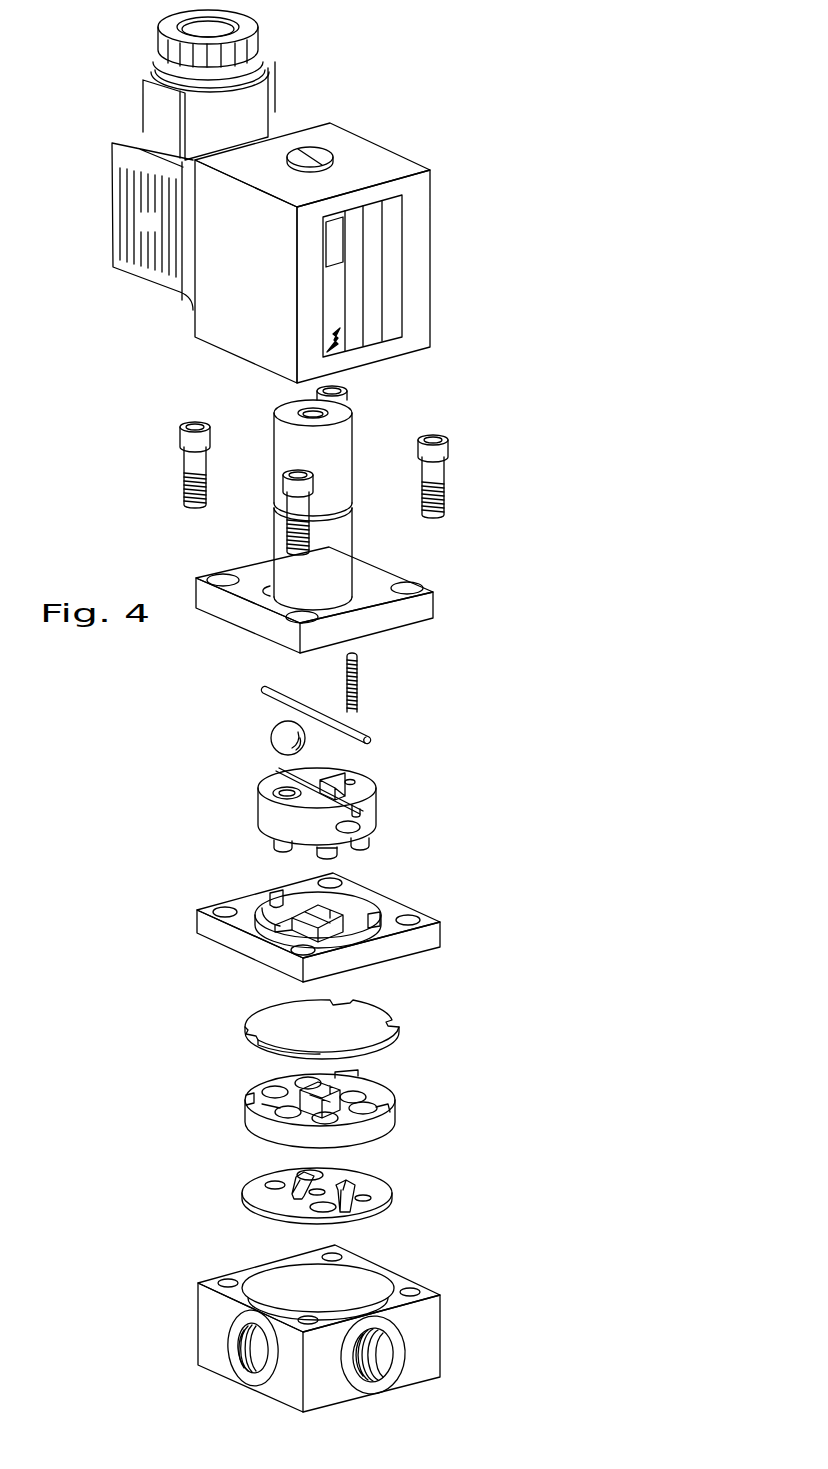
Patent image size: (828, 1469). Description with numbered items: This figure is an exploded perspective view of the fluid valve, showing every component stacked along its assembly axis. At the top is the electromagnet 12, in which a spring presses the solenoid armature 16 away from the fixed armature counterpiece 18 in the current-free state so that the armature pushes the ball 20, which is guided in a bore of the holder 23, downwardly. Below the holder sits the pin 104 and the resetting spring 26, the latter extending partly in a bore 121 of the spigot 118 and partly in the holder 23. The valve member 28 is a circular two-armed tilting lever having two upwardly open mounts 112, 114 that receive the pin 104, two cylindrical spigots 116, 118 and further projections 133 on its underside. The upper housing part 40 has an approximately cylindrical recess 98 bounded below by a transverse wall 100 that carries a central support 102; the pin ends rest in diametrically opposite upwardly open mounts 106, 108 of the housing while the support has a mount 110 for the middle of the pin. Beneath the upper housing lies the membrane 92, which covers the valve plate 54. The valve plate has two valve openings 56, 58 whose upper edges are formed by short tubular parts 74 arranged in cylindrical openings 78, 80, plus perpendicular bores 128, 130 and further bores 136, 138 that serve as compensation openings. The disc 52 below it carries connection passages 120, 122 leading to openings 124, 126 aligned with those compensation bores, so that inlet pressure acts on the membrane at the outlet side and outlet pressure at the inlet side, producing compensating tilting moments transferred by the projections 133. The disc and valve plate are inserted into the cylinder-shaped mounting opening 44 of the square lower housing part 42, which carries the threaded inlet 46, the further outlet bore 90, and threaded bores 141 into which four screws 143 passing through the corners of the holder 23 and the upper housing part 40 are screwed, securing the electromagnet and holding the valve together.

The electromagnet 12 is at (447, 224).
The fixed armature counterpiece 18 is at (347, 453).
The solenoid armature 16 is at (345, 540).
The screws 143 is at (192, 462).
The holder 23 is at (423, 610).
The resetting spring 26 is at (357, 683).
The pin 104 is at (370, 737).
The ball 20 is at (280, 732).
The valve member 28 is at (327, 807).
The mount 112 is at (285, 782).
The bore 121 is at (352, 780).
The mount 114 is at (357, 810).
The cylindrical spigot 116 is at (277, 840).
The cylindrical spigot 118 is at (360, 833).
The projections 133 is at (340, 850).
The upper housing part 40 is at (298, 923).
The cylindrical recess 98 is at (373, 908).
The mount 106 is at (273, 893).
The transverse wall 100 is at (253, 895).
The support 102 is at (307, 932).
The mount 110 is at (243, 943).
The mount 108 is at (373, 937).
The membrane 92 is at (367, 1018).
The valve plate 54 is at (320, 1103).
The bore 128 is at (307, 1082).
The cylindrical opening 80 is at (350, 1078).
The bore 136 is at (273, 1085).
The valve opening 56 is at (250, 1097).
The valve opening 58 is at (357, 1083).
The tubular part 74 is at (357, 1098).
The cylindrical opening 78 is at (257, 1107).
The bore 138 is at (380, 1112).
The bore 130 is at (338, 1117).
The disc 52 is at (319, 1202).
The opening 124 is at (307, 1173).
The connection passage 122 is at (390, 1188).
The connection passage 120 is at (247, 1195).
The opening 126 is at (317, 1203).
The lower housing part 42 is at (323, 1321).
The threaded bores 141 is at (227, 1278).
The mounting opening 44 is at (380, 1292).
The inlet 46 is at (247, 1347).
The further outlet bore 90 is at (380, 1353).